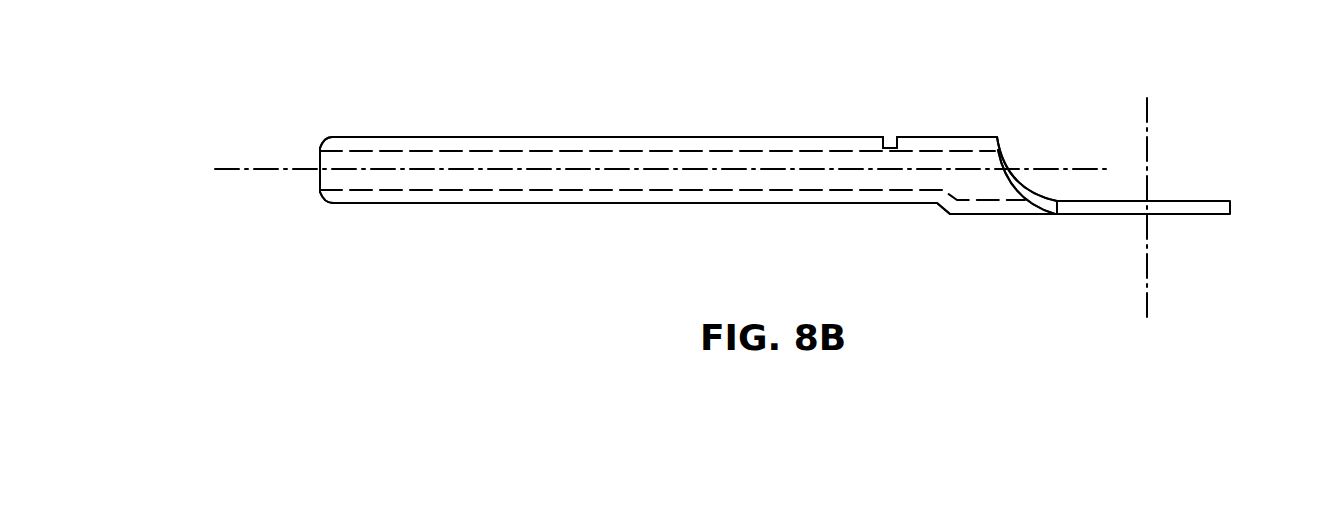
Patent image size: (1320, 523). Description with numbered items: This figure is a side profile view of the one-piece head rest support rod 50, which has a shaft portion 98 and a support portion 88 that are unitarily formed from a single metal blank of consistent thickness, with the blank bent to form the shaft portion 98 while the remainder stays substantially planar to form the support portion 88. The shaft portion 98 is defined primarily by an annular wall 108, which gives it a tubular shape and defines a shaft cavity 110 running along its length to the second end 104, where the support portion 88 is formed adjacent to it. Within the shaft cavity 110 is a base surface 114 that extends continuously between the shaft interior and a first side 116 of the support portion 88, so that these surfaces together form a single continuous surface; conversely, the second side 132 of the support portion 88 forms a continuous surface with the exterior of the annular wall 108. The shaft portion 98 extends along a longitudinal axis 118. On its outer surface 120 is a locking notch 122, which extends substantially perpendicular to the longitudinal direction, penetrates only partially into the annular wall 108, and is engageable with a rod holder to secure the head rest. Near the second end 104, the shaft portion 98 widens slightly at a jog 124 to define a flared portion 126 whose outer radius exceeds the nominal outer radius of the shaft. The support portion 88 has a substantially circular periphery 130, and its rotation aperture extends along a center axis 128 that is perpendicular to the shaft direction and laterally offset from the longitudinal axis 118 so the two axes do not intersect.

The support rod 50 is at (375, 95).
The support portion 88 is at (1165, 215).
The shaft portion 98 is at (410, 203).
The second end 104 is at (998, 142).
The annular wall 108 is at (455, 143).
The shaft cavity 110 is at (592, 150).
The base surface 114 is at (578, 197).
The first side 116 is at (1215, 200).
The longitudinal axis 118 is at (258, 170).
The outer surface 120 is at (320, 152).
The locking notch 122 is at (890, 146).
The jog 124 is at (945, 213).
The flared portion 126 is at (1007, 215).
The center axis 128 is at (1148, 103).
The substantially circular periphery 130 is at (1118, 215).
The second side 132 is at (1217, 215).